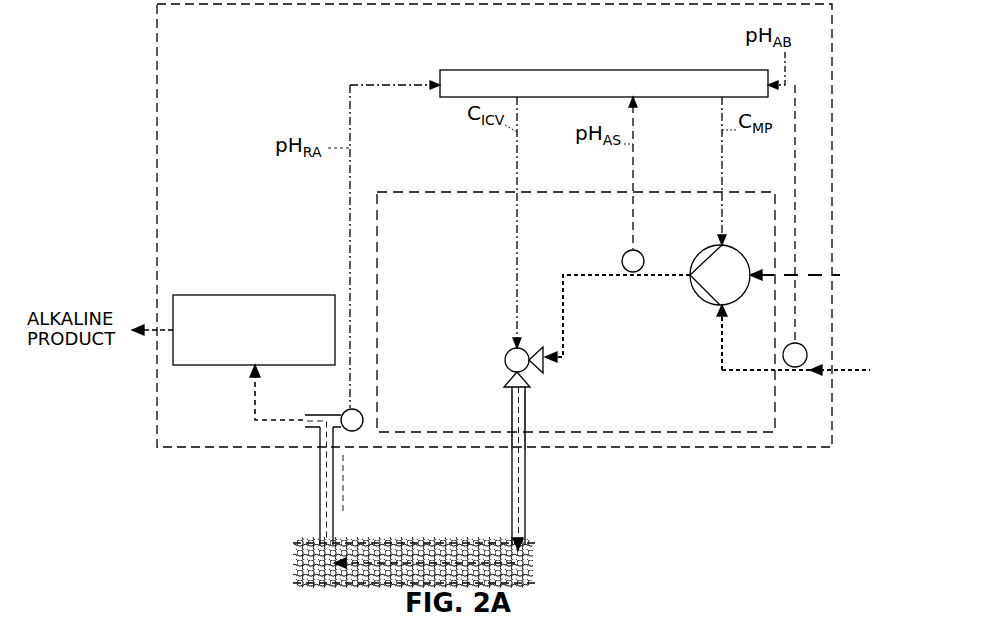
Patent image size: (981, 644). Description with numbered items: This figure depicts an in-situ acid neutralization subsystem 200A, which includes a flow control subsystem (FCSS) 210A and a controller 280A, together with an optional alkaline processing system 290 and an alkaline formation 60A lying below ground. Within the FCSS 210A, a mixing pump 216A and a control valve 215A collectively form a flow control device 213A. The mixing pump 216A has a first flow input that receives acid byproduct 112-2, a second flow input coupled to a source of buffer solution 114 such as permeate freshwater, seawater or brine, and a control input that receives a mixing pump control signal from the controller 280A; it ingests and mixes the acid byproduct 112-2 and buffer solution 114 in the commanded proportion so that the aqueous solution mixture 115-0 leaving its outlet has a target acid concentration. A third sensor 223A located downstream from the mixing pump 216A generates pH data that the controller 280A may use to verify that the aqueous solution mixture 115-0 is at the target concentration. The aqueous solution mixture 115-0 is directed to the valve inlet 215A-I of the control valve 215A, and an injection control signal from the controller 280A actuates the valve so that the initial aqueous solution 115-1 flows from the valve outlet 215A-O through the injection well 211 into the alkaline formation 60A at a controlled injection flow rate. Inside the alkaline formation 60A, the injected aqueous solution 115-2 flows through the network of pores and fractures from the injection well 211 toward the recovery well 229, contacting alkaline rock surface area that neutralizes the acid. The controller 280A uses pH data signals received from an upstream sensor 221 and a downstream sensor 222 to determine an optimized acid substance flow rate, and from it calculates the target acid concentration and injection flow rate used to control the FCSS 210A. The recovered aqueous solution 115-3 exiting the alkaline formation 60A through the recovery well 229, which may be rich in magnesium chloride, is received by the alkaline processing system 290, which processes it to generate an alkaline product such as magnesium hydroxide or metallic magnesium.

The in-situ acid neutralization subsystem 200A is at (494, 225).
The controller 280A is at (604, 83).
The flow control subsystem (FCSS) 210A is at (576, 312).
The alkaline processing system 290 is at (254, 330).
The mixing pump 216A is at (712, 278).
The flow control device 213A is at (652, 334).
The control valve 215A is at (529, 382).
The valve inlet 215A-I is at (538, 375).
The valve outlet 215A-O is at (508, 383).
The buffer solution 114 is at (819, 276).
The acid byproduct 112-2 is at (826, 344).
The upstream sensor 221 is at (806, 348).
The third sensor 223A is at (625, 252).
The downstream sensor 222 is at (357, 432).
The aqueous solution mixture 115-0 is at (570, 282).
The initial aqueous solution 115-1 is at (511, 430).
The injected aqueous solution 115-2 is at (447, 535).
The recovered aqueous solution 115-3 is at (300, 406).
The injection well 211 is at (526, 500).
The recovery well 229 is at (318, 466).
The alkaline formation 60A is at (282, 546).